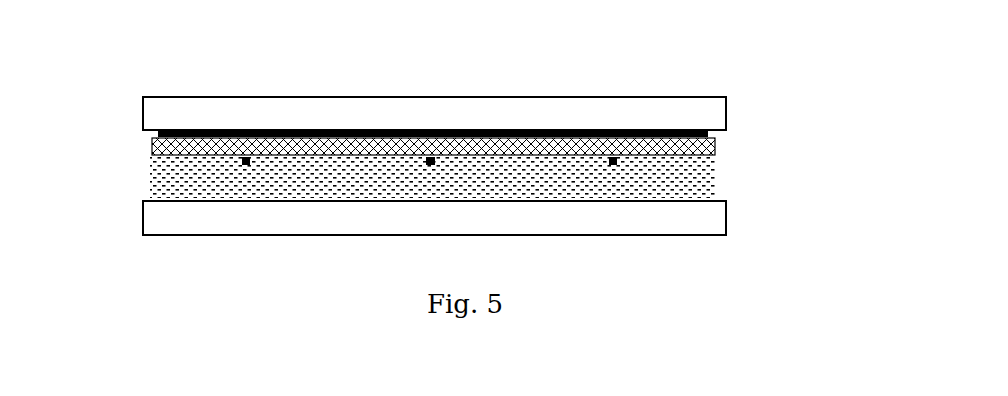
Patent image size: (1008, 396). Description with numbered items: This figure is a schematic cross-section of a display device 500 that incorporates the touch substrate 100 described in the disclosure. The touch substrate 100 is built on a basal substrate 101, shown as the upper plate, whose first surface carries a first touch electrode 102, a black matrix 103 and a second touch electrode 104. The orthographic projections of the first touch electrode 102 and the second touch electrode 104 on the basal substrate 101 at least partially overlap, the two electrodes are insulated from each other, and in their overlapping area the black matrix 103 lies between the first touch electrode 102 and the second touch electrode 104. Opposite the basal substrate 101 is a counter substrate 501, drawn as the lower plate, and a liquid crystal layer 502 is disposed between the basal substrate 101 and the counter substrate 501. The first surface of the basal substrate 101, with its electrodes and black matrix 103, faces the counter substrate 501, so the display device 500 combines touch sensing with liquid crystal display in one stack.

The display device 500 is at (83, 40).
The touch substrate 100 is at (813, 68).
The basal substrate 101 is at (728, 112).
The first touch electrode 102 is at (541, 130).
The black matrix 103 is at (716, 152).
The second touch electrode 104 is at (618, 160).
The liquid crystal layer 502 is at (172, 180).
The counter substrate 501 is at (143, 218).